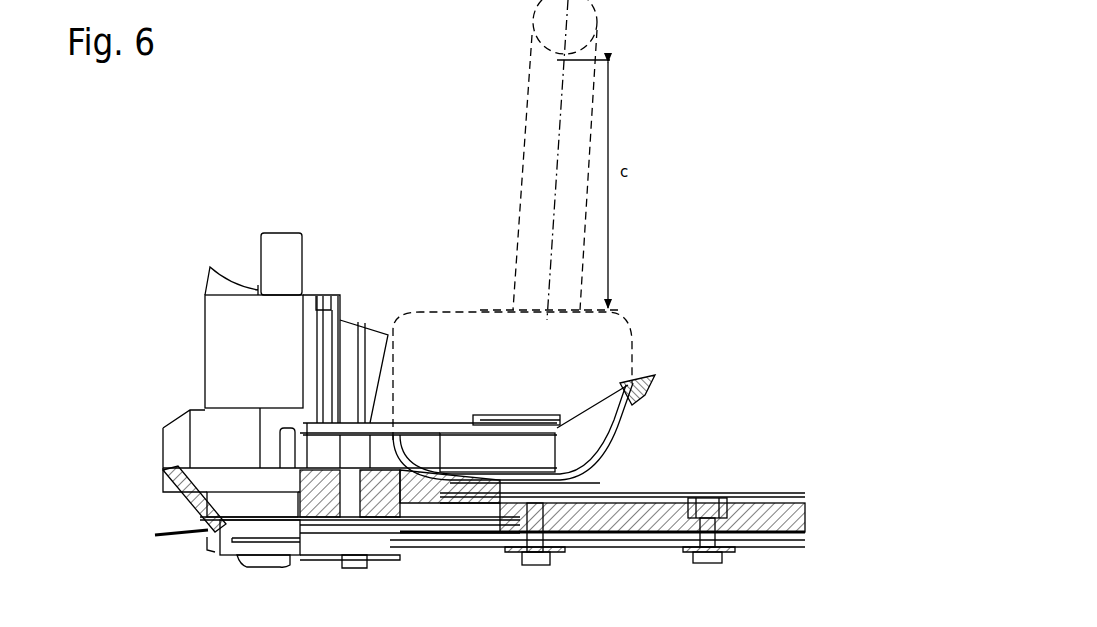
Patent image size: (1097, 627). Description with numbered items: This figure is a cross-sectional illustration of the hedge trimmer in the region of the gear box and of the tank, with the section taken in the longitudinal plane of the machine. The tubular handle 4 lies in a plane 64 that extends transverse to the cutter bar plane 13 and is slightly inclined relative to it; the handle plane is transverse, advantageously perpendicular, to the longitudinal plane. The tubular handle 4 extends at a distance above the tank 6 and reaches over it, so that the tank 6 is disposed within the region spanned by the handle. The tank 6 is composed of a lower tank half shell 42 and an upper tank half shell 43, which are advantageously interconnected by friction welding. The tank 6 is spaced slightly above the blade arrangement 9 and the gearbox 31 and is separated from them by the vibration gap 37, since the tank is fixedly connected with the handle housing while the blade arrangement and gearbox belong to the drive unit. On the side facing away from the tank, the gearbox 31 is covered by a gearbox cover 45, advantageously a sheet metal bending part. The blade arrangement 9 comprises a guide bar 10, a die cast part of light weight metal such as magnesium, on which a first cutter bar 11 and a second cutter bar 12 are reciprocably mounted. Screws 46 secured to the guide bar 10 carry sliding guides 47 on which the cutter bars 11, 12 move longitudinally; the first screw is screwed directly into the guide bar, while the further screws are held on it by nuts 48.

The tubular handle 4 is at (598, 25).
The plane 64 is at (557, 163).
The upper tank half shell 43 is at (630, 330).
The tank 6 is at (607, 412).
The lower tank half shell 42 is at (633, 430).
The vibration gap 37 is at (604, 480).
The blade arrangement 9 is at (767, 437).
The nut 48 is at (713, 500).
The guide bar 10 is at (757, 517).
The cutter bar plane 13 is at (810, 537).
The first cutter bar 11 is at (563, 547).
The second cutter bar 12 is at (597, 537).
The screw 46 is at (530, 565).
The sliding guide 47 is at (510, 550).
The gearbox cover 45 is at (352, 568).
The gearbox 31 is at (182, 513).